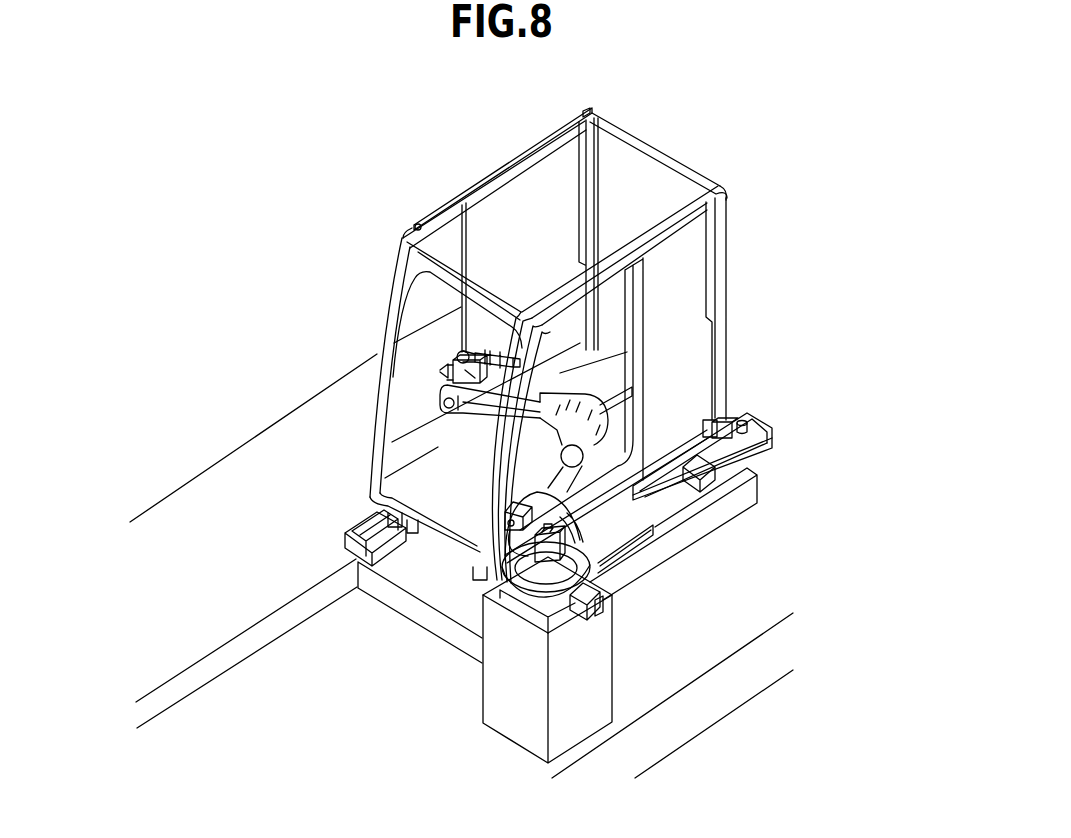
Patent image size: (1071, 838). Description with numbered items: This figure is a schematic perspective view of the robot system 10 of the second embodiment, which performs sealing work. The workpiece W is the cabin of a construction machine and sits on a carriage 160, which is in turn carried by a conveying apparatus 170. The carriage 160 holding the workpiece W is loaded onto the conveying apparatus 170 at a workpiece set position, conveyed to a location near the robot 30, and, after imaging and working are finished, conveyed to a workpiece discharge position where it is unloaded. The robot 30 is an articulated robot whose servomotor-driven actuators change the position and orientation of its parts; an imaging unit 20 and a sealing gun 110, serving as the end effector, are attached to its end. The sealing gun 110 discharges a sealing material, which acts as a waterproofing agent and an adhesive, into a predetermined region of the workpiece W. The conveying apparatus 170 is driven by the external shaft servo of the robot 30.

The robot system 10 is at (692, 119).
The imaging unit 20 is at (443, 381).
The robot 30 is at (598, 462).
The sealing gun 110 is at (496, 353).
The carriage 160 is at (347, 529).
The conveying apparatus 170 is at (413, 608).
The workpiece W is at (498, 177).